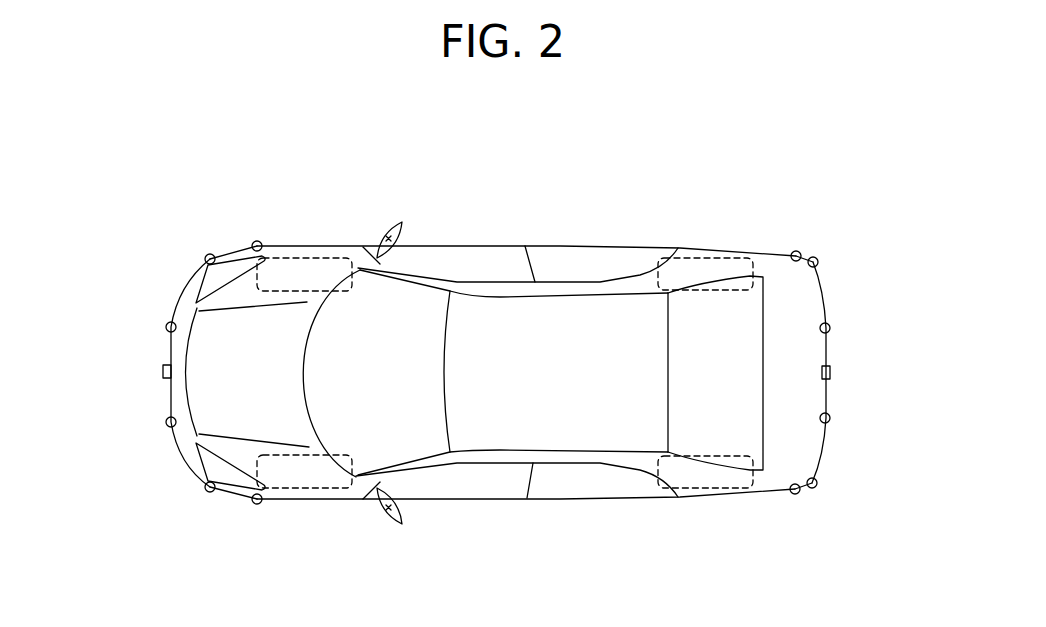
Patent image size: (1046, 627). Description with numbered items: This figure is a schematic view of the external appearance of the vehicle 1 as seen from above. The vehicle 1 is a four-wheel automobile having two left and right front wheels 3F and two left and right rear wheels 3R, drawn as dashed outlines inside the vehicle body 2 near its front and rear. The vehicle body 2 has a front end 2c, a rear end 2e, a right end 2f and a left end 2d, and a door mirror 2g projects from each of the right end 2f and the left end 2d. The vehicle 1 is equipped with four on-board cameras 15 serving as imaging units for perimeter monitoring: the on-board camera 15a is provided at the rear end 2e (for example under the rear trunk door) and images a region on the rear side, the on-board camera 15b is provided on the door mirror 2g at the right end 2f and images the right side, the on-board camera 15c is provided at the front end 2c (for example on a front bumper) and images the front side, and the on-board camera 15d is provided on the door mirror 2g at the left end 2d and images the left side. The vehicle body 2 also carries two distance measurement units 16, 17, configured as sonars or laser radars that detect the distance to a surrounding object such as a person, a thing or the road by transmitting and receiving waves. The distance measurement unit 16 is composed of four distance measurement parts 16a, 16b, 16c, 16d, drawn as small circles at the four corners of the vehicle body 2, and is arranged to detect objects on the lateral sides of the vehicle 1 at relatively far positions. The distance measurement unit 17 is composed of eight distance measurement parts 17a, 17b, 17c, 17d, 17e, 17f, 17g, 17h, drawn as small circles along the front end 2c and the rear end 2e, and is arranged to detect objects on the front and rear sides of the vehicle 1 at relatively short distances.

The vehicle 1 is at (600, 172).
The vehicle body 2 is at (766, 248).
The front end 2c is at (168, 389).
The left end 2d is at (612, 500).
The rear end 2e is at (830, 397).
The right end 2f is at (610, 246).
The door mirror 2g is at (404, 225).
The front wheel 3F is at (295, 257).
The rear wheel 3R is at (700, 257).
The on-board camera 15 is at (500, 389).
The on-board camera 15a is at (832, 373).
The on-board camera 15b is at (388, 238).
The on-board camera 15c is at (164, 372).
The on-board camera 15d is at (387, 523).
The distance measurement unit 16 is at (503, 368).
The distance measurement part 16a is at (795, 495).
The distance measurement part 16b is at (797, 250).
The distance measurement part 16c is at (256, 241).
The distance measurement part 16d is at (255, 507).
The distance measurement unit 17 is at (500, 345).
The distance measurement part 17a is at (818, 484).
The distance measurement part 17b is at (830, 419).
The distance measurement part 17c is at (830, 327).
The distance measurement part 17d is at (818, 259).
The distance measurement part 17e is at (206, 260).
The distance measurement part 17f is at (166, 327).
The distance measurement part 17g is at (166, 423).
The distance measurement part 17h is at (205, 487).